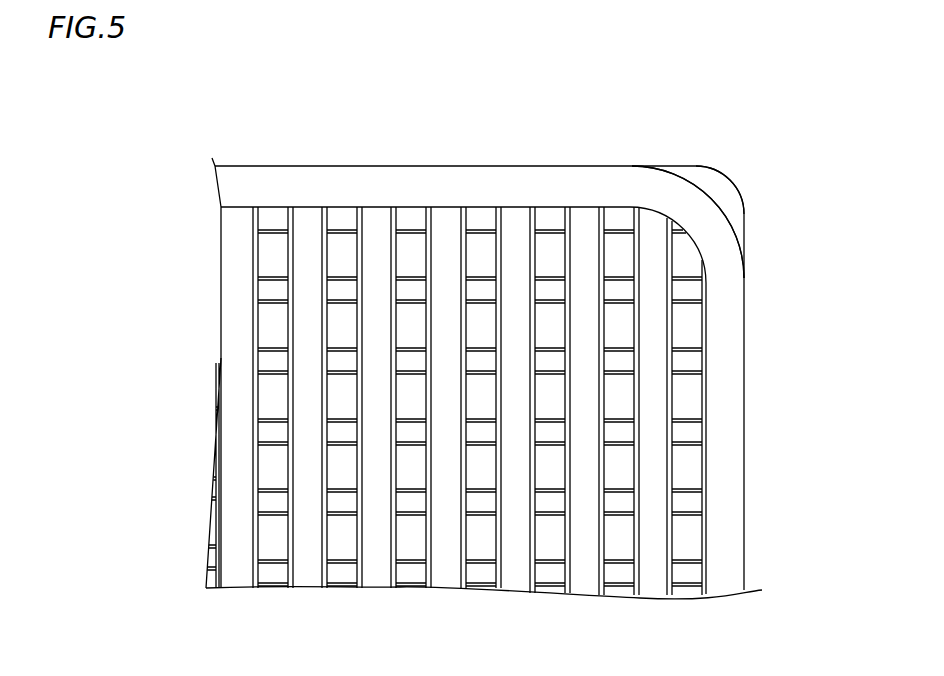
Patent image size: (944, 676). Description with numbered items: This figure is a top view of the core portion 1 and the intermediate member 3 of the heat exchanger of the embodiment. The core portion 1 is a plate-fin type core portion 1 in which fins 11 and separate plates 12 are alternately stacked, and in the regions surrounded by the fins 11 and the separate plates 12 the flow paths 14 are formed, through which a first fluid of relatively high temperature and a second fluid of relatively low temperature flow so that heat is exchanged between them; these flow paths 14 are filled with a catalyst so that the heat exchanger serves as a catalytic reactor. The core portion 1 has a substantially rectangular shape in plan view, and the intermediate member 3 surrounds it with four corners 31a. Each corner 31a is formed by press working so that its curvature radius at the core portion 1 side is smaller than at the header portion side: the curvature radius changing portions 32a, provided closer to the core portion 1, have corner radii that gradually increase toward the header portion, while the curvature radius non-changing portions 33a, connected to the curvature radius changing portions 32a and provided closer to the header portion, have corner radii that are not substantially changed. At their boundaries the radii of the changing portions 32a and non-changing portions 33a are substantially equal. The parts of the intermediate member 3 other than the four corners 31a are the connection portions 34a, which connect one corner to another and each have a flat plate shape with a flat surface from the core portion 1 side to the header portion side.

The core portion 1 is at (512, 207).
The intermediate member 3 is at (572, 188).
The fin 11 is at (270, 228).
The separate plate 12 is at (313, 222).
The flow path 14 is at (260, 257).
The corner 31a is at (727, 192).
The curvature radius changing portion 32a is at (738, 184).
The curvature radius non-changing portion 33a is at (727, 218).
The connection portion 34a is at (728, 417).